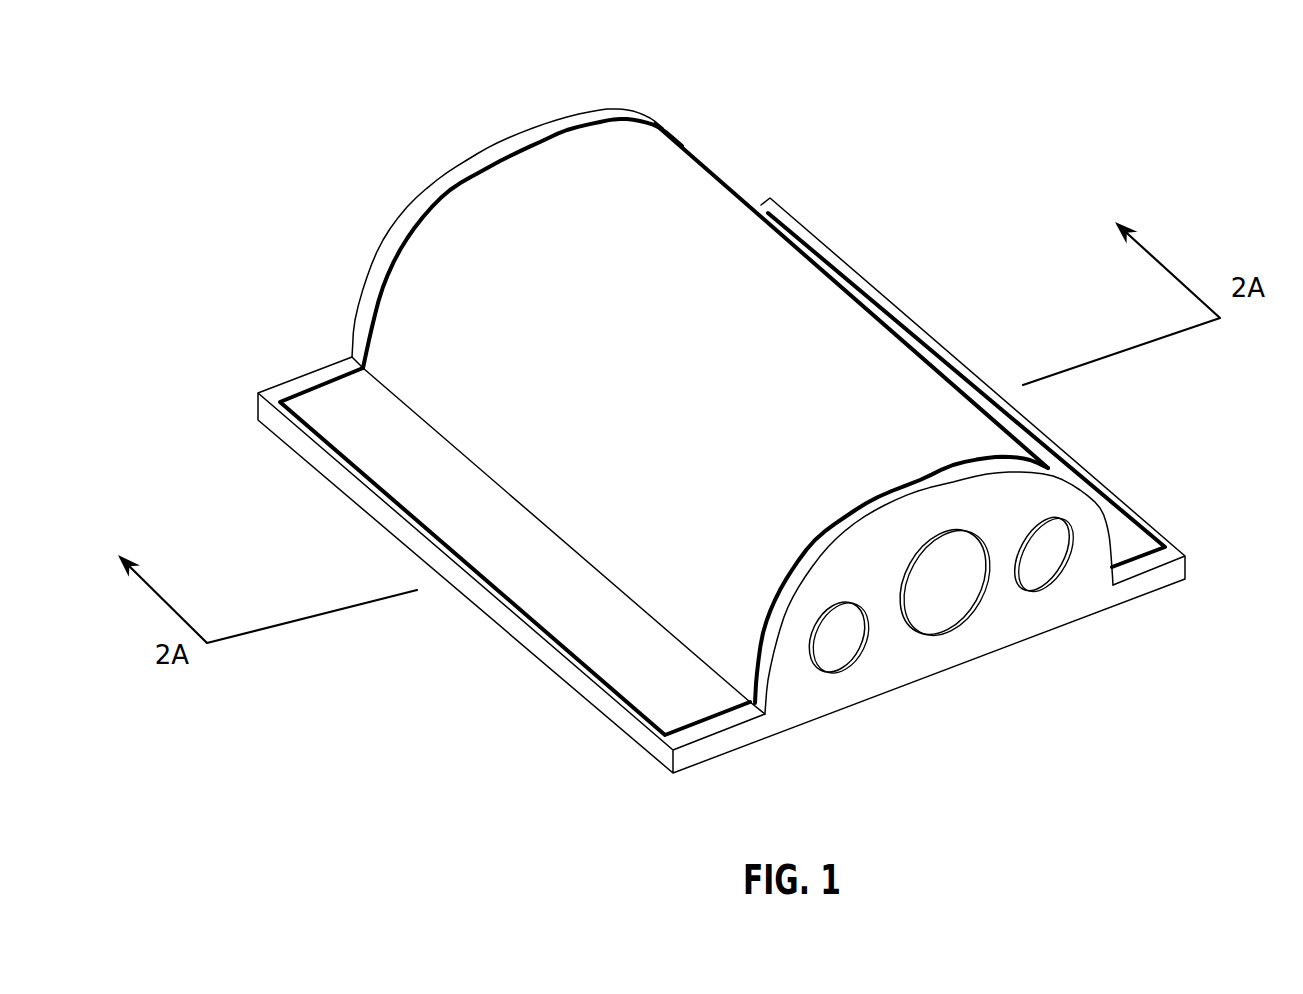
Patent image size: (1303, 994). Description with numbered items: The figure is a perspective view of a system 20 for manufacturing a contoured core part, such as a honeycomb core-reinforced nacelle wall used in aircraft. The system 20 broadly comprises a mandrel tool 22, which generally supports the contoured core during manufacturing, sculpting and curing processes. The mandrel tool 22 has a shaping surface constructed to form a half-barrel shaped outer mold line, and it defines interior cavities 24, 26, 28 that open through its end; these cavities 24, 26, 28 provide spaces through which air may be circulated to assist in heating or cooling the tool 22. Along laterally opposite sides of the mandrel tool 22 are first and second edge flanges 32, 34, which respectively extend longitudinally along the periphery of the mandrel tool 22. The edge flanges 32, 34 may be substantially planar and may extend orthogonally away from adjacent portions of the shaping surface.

The system 20 is at (774, 455).
The mandrel tool 22 is at (852, 713).
The interior cavity 24 is at (824, 645).
The interior cavity 26 is at (925, 591).
The interior cavity 28 is at (1027, 563).
The first edge flange 32 is at (650, 768).
The second edge flange 34 is at (1200, 570).